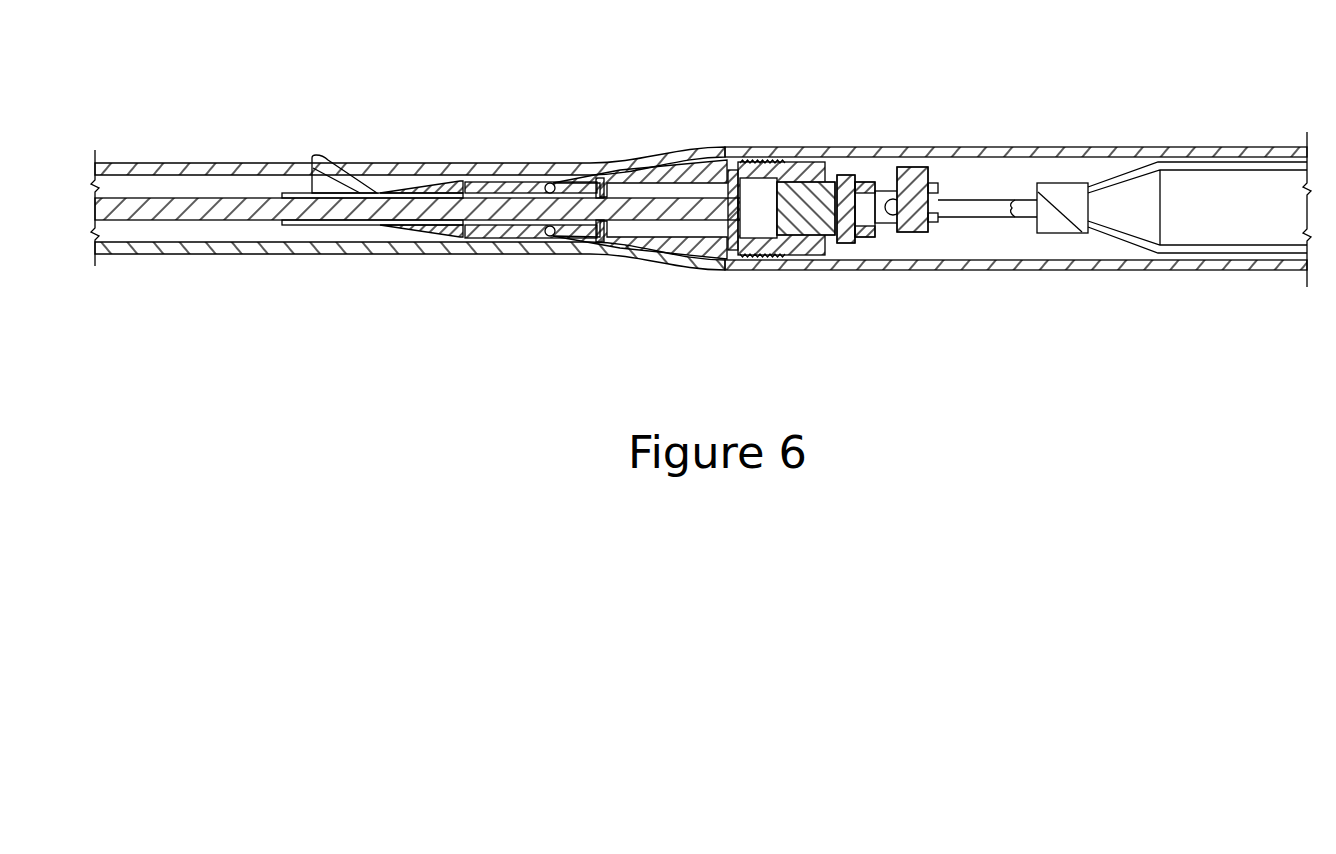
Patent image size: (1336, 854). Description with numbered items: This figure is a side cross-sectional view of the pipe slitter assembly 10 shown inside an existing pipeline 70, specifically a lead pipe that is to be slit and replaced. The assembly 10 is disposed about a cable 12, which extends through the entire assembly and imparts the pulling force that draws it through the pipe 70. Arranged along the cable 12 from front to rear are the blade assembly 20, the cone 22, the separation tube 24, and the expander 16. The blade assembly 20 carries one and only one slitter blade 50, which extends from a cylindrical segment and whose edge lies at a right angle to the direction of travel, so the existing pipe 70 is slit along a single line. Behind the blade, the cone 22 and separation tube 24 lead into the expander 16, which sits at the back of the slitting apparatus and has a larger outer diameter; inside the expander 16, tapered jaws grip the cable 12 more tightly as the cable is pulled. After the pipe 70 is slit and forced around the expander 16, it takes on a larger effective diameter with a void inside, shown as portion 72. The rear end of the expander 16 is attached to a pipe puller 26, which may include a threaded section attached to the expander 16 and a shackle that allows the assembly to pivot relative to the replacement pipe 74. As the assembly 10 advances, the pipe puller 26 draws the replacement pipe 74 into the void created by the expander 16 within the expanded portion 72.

The pipe slitter assembly 10 is at (659, 264).
The cable 12 is at (148, 218).
The expander 16 is at (663, 168).
The blade assembly 20 is at (355, 157).
The cone 22 is at (453, 180).
The separation tube 24 is at (507, 182).
The pipe puller 26 is at (823, 257).
The slitter blade 50 is at (320, 155).
The pipeline 70 is at (182, 165).
The portion 72 is at (920, 150).
The replacement pipe 74 is at (1130, 170).